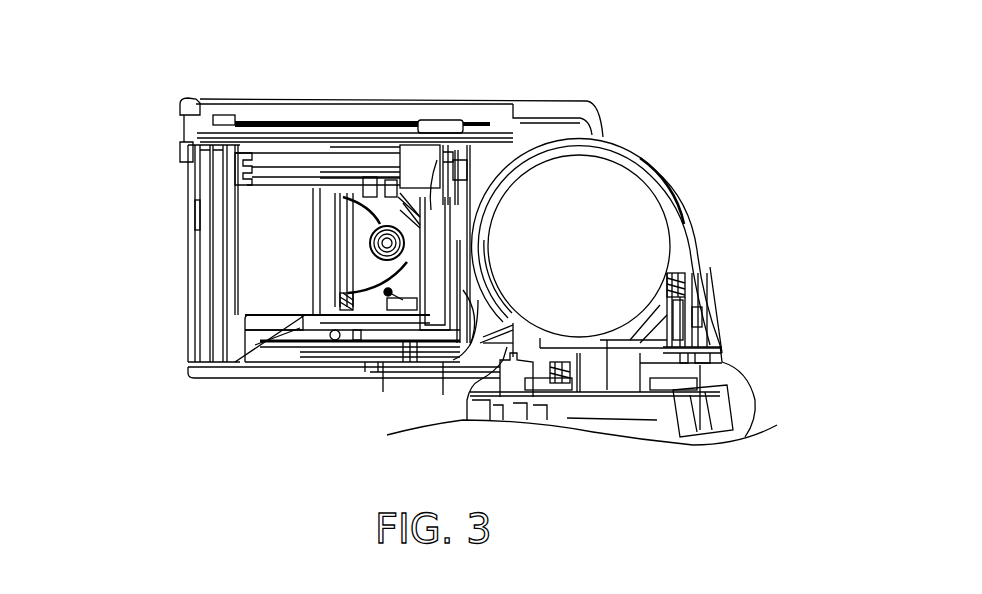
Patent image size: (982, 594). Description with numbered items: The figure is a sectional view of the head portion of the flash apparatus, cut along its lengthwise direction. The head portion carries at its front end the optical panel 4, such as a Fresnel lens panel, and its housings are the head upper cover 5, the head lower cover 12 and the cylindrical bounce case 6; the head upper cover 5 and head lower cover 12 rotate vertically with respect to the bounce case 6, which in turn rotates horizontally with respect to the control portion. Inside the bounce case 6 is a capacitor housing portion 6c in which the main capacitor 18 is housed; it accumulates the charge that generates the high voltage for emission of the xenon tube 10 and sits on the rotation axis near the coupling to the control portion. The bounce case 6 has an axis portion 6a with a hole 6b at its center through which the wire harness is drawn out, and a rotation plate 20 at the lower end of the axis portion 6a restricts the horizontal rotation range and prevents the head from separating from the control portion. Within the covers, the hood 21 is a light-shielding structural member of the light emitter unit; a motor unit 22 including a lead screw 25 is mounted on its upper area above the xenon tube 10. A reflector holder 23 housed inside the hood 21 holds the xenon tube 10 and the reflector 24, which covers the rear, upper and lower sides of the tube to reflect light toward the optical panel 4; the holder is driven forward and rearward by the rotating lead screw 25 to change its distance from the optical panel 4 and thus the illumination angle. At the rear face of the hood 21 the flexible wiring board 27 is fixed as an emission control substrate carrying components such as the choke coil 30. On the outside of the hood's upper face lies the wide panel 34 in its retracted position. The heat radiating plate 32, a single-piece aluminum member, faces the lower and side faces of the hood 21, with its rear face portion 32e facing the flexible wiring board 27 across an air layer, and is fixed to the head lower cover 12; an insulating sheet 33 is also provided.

The optical panel 4 is at (198, 212).
The head upper cover 5 is at (553, 112).
The bounce case 6 is at (680, 228).
The axis portion 6a is at (663, 350).
The hole 6b is at (617, 380).
The capacitor housing portion 6c is at (652, 317).
The xenon tube 10 is at (332, 182).
The head lower cover 12 is at (295, 370).
The main capacitor 18 is at (598, 218).
The rotation plate 20 is at (667, 383).
The hood 21 is at (232, 380).
The motor unit 22 is at (427, 152).
The reflector holder 23 is at (385, 207).
The reflector 24 is at (357, 270).
The lead screw 25 is at (270, 167).
The flexible wiring board 27 is at (407, 340).
The choke coil 30 is at (457, 173).
The heat radiating plate 32 is at (362, 348).
The rear face portion 32e is at (472, 352).
The insulating sheet 33 is at (447, 200).
The wide panel 34 is at (172, 120).